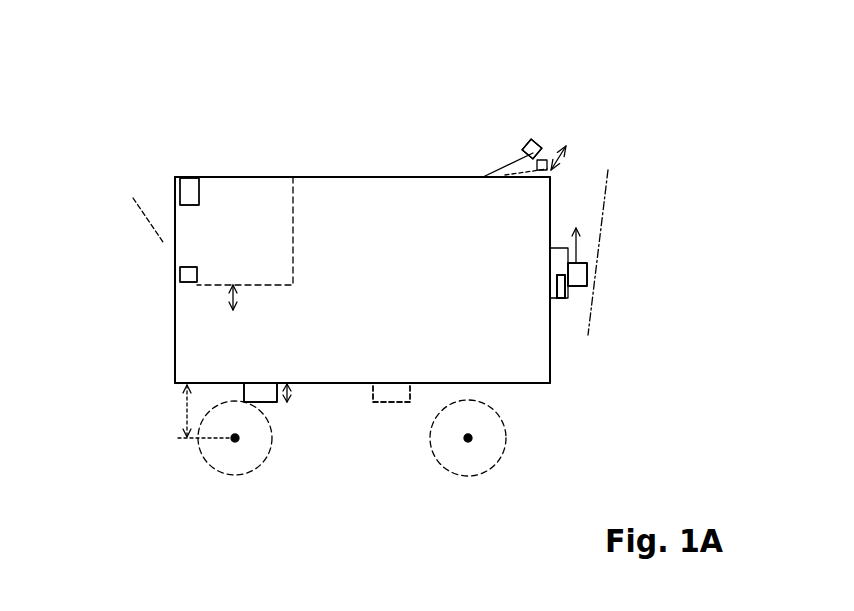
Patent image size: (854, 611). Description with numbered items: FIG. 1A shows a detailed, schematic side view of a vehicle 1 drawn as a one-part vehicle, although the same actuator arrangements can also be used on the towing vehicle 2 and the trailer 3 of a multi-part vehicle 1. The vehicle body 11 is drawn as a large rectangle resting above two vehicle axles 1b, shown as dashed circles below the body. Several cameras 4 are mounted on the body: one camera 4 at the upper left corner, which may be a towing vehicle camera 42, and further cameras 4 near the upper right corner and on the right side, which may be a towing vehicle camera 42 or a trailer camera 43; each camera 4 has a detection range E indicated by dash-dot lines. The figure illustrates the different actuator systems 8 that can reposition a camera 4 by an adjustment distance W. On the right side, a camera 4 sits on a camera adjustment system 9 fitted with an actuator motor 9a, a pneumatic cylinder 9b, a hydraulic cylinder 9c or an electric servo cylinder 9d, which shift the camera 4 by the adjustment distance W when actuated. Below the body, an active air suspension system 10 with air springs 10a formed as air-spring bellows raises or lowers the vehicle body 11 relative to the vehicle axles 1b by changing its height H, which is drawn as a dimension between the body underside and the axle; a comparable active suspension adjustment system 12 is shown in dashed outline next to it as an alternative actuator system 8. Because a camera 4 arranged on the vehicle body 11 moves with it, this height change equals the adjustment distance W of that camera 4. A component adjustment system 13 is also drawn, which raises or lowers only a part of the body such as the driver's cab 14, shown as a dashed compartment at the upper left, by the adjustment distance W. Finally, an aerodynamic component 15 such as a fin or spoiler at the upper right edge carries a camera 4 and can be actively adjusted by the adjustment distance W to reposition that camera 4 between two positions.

The vehicle 1 is at (252, 110).
The towing vehicle 2 is at (362, 280).
The trailer 3 is at (362, 280).
The vehicle axle 1b is at (233, 440).
The camera 4 is at (188, 180).
The towing vehicle camera 42 is at (534, 138).
The trailer camera 43 is at (580, 265).
The actuator system 8 is at (180, 276).
The camera adjustment system 9 is at (562, 258).
The actuator motor 9a is at (566, 299).
The pneumatic cylinder 9b is at (561, 286).
The hydraulic cylinder 9c is at (561, 286).
The electric servo cylinder 9d is at (561, 286).
The active air suspension system 10 is at (275, 473).
The air spring 10a is at (265, 393).
The vehicle body 11 is at (175, 351).
The active suspension adjustment system 12 is at (393, 403).
The component adjustment system 13 is at (485, 147).
The driver's cab 14 is at (293, 215).
The aerodynamic component 15 is at (522, 175).
The detection range E is at (627, 295).
The adjustment distance W is at (243, 297).
The height H is at (185, 408).